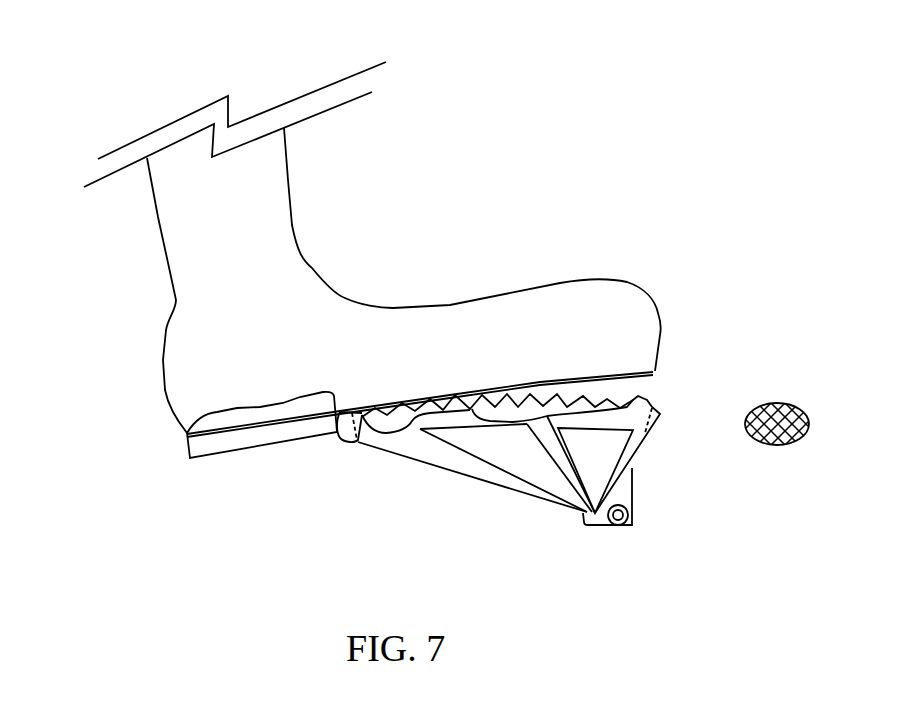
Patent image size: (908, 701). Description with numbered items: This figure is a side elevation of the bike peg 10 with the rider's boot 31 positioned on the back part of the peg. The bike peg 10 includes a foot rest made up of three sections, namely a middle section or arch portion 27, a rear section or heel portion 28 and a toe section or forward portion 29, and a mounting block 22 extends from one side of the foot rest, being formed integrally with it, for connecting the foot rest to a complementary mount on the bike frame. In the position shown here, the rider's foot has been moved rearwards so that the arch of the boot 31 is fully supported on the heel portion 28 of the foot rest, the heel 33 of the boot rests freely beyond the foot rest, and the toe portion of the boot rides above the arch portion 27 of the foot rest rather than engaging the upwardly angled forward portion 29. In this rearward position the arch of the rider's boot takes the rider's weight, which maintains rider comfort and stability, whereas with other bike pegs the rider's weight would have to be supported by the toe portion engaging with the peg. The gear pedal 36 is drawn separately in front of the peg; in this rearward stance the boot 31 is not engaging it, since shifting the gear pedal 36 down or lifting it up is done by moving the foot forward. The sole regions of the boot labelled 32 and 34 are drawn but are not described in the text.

The bike peg 10 is at (427, 472).
The mounting block 22 is at (618, 497).
The middle section (arch portion) 27 is at (550, 420).
The rear section (heel portion) 28 is at (408, 431).
The toe section (forward portion) 29 is at (647, 400).
The rider's boot 31 is at (583, 298).
The forefoot region of sole 32 is at (490, 377).
The heel 33 is at (295, 400).
The toe region of sole 34 is at (650, 363).
The gear pedal 36 is at (797, 408).